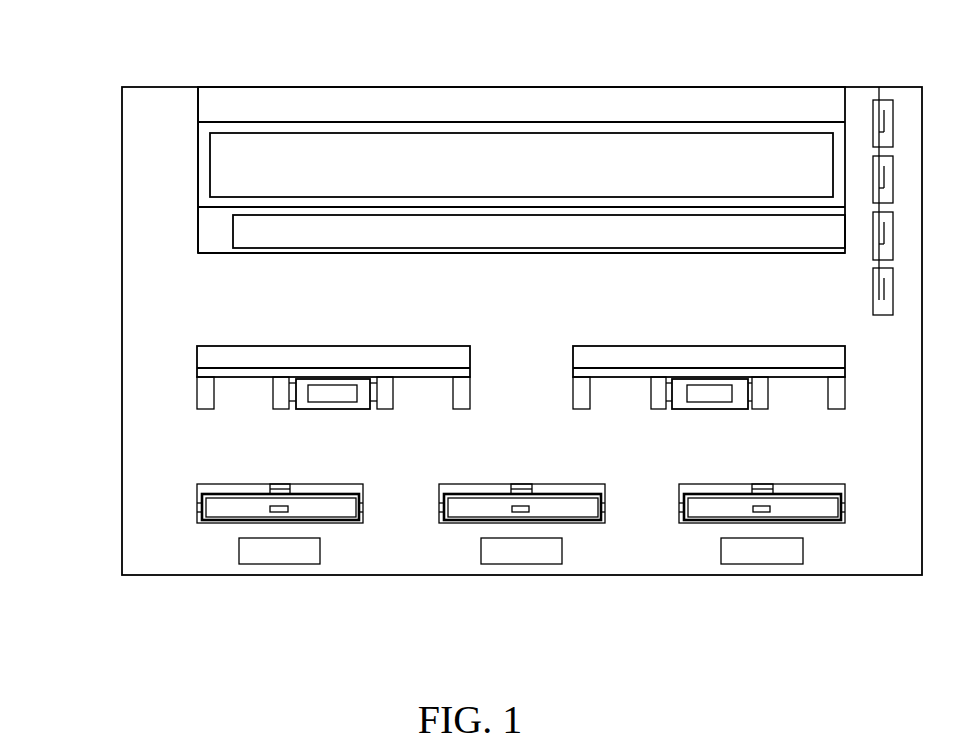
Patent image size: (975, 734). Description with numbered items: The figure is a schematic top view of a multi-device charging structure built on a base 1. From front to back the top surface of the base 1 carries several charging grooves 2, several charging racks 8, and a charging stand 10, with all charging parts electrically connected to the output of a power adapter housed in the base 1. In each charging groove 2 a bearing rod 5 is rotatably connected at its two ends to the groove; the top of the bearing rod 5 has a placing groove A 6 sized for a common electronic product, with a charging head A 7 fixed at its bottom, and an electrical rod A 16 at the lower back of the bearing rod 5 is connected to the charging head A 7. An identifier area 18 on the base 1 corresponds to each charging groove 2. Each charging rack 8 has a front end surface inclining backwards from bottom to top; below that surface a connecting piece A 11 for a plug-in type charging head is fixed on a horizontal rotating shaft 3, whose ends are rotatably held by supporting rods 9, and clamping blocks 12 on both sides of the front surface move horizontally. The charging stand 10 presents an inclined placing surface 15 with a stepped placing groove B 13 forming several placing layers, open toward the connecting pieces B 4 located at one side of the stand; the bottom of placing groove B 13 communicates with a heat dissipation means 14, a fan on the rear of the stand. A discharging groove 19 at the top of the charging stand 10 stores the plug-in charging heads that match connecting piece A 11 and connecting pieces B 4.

The base 1 is at (155, 508).
The charging groove 2 is at (233, 523).
The horizontal rotating shaft 3 is at (283, 395).
The connecting piece B 4 is at (879, 95).
The bearing rod 5 is at (337, 518).
The placing groove A 6 is at (473, 508).
The charging head A 7 is at (517, 509).
The charging rack 8 is at (293, 358).
The supporting rod 9 is at (305, 397).
The charging stand 10 is at (195, 170).
The connecting piece A 11 is at (707, 395).
The clamping block 12 is at (837, 392).
The placing groove B 13 is at (322, 232).
The heat dissipation means 14 is at (217, 103).
The placing surface 15 is at (222, 227).
The electrical rod A 16 is at (768, 490).
The identifier area 18 is at (755, 555).
The discharging groove 19 is at (433, 156).